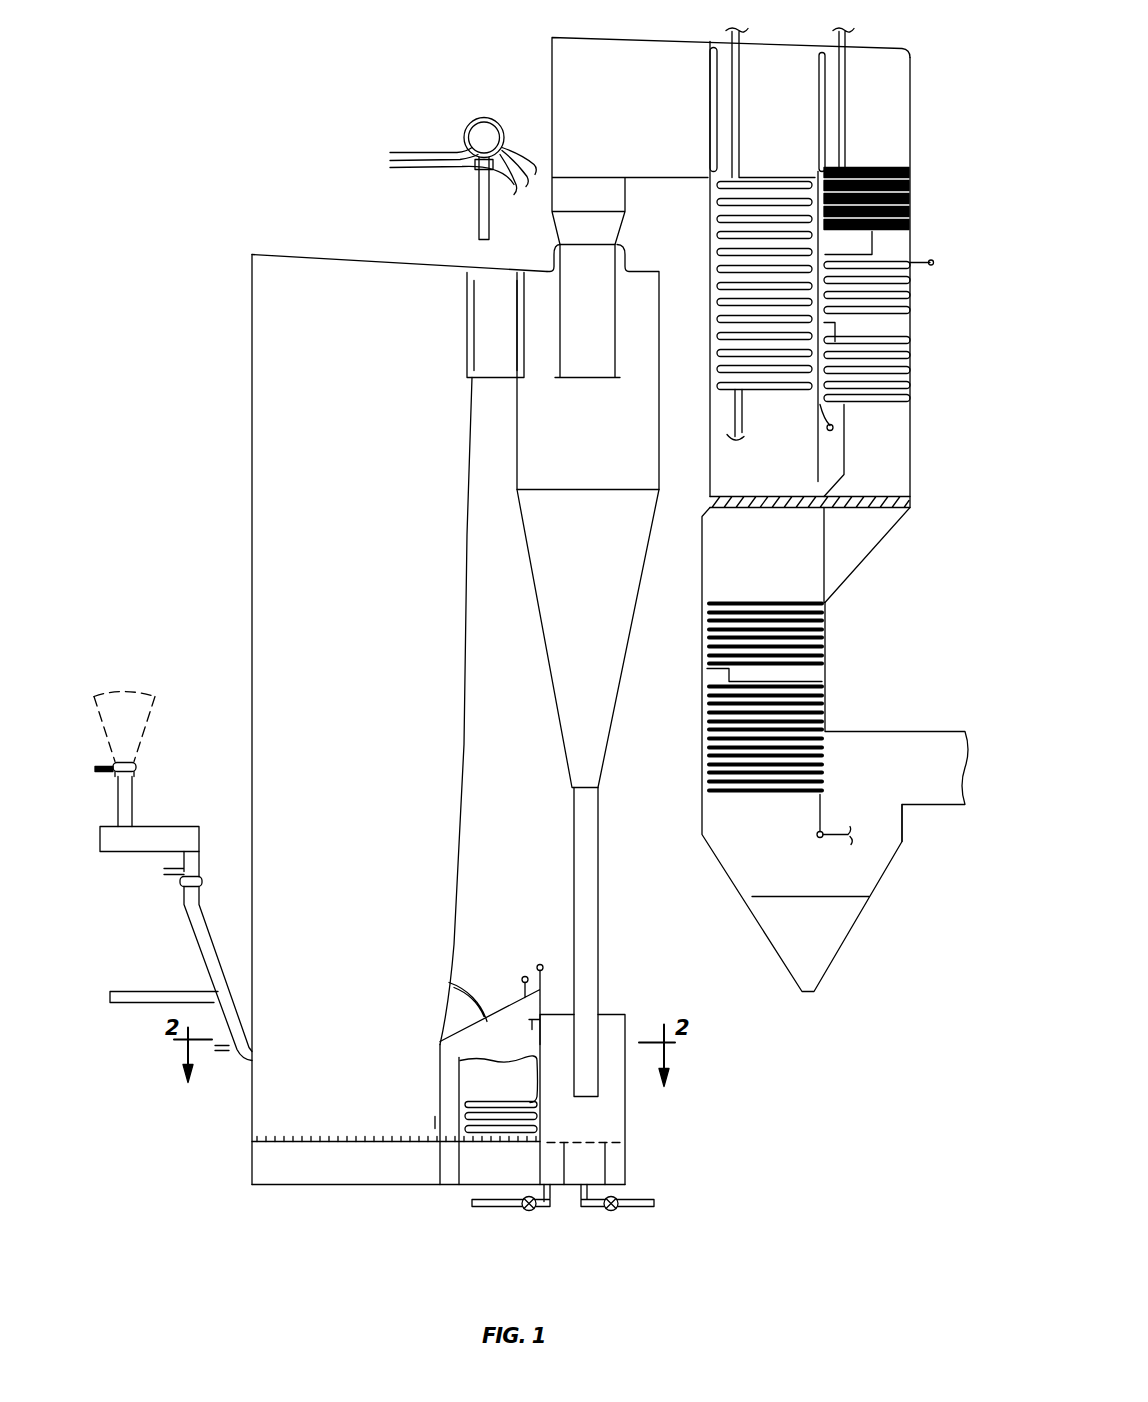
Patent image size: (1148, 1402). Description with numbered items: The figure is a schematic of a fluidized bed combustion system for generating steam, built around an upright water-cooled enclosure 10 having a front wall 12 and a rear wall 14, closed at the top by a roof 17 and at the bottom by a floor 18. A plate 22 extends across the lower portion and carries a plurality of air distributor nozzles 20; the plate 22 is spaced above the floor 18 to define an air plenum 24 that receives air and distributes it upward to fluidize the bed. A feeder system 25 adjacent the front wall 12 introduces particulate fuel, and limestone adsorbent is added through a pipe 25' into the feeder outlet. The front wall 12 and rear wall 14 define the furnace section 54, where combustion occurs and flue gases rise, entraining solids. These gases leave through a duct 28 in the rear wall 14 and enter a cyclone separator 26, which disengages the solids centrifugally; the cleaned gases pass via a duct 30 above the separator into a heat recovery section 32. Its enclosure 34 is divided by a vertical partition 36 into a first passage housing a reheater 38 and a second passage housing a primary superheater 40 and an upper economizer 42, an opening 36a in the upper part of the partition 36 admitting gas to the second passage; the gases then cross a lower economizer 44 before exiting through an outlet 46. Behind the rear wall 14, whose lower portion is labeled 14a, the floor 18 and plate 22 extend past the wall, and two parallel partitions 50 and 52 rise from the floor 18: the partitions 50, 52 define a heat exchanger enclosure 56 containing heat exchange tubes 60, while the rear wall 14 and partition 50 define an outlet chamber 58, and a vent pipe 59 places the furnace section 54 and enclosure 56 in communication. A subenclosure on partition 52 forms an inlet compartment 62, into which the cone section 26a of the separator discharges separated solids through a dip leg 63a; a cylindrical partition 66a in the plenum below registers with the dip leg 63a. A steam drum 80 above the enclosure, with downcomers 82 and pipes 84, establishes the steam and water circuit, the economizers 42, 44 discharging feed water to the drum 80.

The enclosure 10 is at (212, 538).
The front wall 12 is at (250, 658).
The rear wall 14 is at (466, 742).
The lower portion of partition wall 14a is at (433, 1118).
The roof 17 is at (318, 250).
The floor 18 is at (310, 1182).
The air distributor nozzles 20 is at (362, 1130).
The plate 22 is at (282, 1138).
The air plenum 24 is at (354, 1166).
The feeder system 25 is at (173, 876).
The pipe 25' is at (164, 973).
The cyclone separator 26 is at (588, 367).
The cone section 26a is at (588, 639).
The duct 28 is at (488, 375).
The duct 30 is at (550, 33).
The heat recovery section 32 is at (928, 138).
The enclosure 34 is at (912, 240).
The vertical partition 36 is at (816, 50).
The opening 36a is at (816, 133).
The reheater 38 is at (785, 395).
The primary superheater 40 is at (910, 195).
The upper economizer 42 is at (910, 312).
The lower economizer 44 is at (822, 633).
The outlet 46 is at (933, 740).
The partition 50 is at (458, 1162).
The partition 52 is at (538, 1088).
The furnace section 54 is at (349, 953).
The heat exchanger enclosure 56 is at (499, 1079).
The outlet chamber 58 is at (440, 1062).
The vent pipe 59 is at (470, 990).
The heat exchange tubes 60 is at (495, 1115).
The inlet compartment 62 is at (623, 1012).
The dip leg 63a is at (590, 915).
The cylindrical partition 66a is at (605, 1150).
The steam drum 80 is at (478, 113).
The downcomers 82 is at (476, 192).
The pipes 84 is at (405, 150).